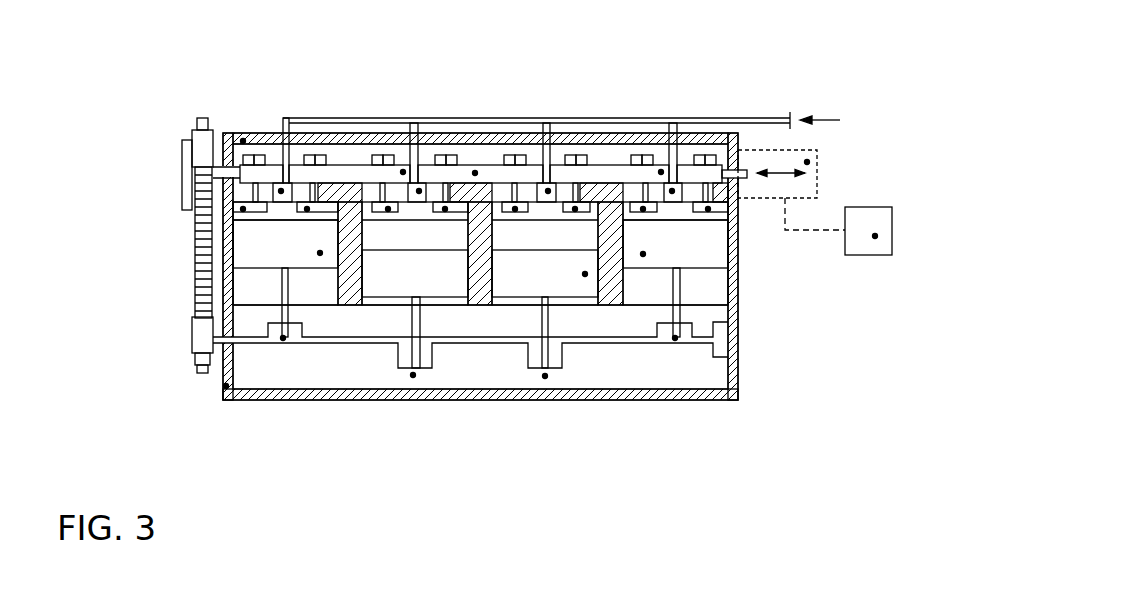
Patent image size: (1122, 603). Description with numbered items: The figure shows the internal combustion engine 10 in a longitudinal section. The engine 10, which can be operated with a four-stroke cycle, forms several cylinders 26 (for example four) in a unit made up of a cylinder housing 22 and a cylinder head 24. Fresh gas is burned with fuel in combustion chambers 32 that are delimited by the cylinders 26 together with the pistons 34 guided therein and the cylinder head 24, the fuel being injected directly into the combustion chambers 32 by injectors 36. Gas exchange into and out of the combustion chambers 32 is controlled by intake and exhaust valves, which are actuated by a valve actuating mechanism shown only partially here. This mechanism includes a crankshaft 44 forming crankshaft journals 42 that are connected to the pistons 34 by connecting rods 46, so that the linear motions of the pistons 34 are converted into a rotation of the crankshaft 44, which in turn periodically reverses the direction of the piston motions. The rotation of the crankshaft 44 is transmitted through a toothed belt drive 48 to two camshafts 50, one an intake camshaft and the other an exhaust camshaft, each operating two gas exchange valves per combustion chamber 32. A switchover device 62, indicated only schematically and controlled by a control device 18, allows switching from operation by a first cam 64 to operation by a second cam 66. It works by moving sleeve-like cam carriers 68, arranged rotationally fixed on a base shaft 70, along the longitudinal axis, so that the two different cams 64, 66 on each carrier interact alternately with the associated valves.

The internal combustion engine 10 is at (158, 105).
The control device 18 is at (875, 236).
The cylinder housing 22 is at (226, 386).
The cylinder head 24 is at (243, 141).
The cylinder 26 is at (255, 288).
The combustion chamber 32 is at (403, 207).
The piston 34 is at (320, 253).
The injector 36 is at (281, 191).
The crankshaft journal 42 is at (272, 352).
The crankshaft 44 is at (585, 274).
The connecting rod 46 is at (283, 338).
The toothed belt drive 48 is at (190, 268).
The camshaft 50 is at (490, 167).
The switchover device 62 is at (807, 162).
The first cam 64 is at (323, 153).
The second cam 66 is at (309, 153).
The cam carrier 68 is at (403, 172).
The base shaft 70 is at (475, 173).